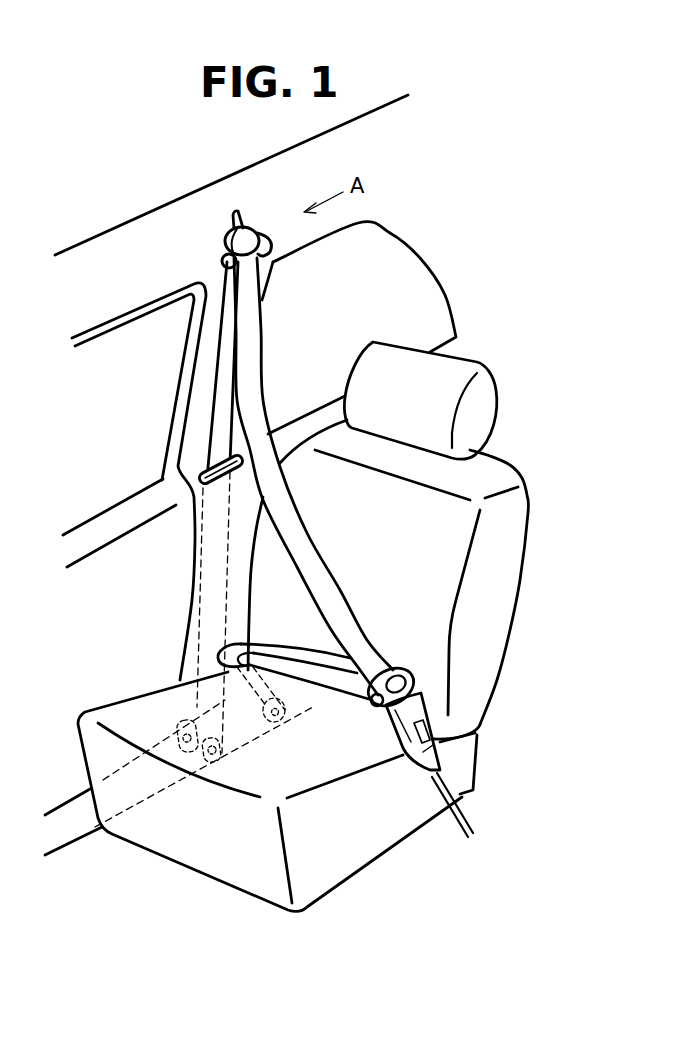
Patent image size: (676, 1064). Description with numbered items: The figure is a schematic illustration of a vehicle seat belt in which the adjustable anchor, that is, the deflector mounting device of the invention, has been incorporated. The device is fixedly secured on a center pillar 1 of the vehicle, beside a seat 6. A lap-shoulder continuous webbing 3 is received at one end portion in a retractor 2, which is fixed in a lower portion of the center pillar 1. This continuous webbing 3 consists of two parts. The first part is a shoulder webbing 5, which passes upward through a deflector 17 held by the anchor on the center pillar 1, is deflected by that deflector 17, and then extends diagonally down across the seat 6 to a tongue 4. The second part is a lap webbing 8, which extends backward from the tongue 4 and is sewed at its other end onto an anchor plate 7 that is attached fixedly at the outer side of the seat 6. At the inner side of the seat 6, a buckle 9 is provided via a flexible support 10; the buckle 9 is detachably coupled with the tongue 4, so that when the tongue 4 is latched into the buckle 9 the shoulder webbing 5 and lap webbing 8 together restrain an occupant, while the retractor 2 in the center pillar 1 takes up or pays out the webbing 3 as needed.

The center pillar 1 is at (197, 432).
The retractor 2 is at (192, 765).
The lap-shoulder continuous webbing 3 is at (220, 358).
The tongue 4 is at (413, 670).
The shoulder webbing 5 is at (248, 378).
The seat 6 is at (485, 480).
The anchor plate 7 is at (285, 716).
The lap webbing 8 is at (273, 642).
The buckle 9 is at (427, 707).
The flexible support 10 is at (465, 805).
The deflector 17 is at (220, 257).